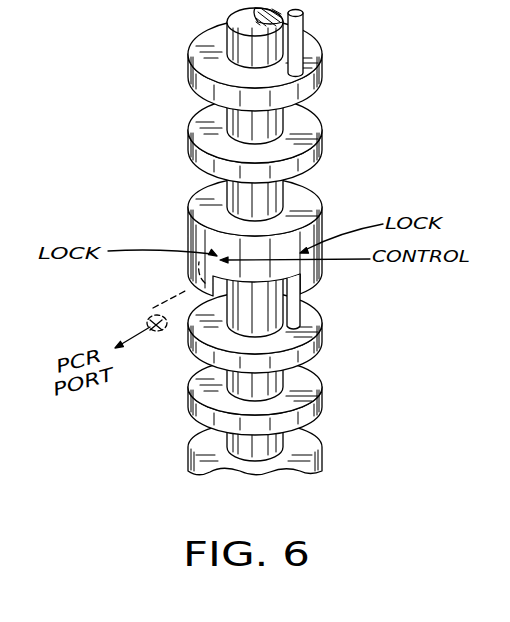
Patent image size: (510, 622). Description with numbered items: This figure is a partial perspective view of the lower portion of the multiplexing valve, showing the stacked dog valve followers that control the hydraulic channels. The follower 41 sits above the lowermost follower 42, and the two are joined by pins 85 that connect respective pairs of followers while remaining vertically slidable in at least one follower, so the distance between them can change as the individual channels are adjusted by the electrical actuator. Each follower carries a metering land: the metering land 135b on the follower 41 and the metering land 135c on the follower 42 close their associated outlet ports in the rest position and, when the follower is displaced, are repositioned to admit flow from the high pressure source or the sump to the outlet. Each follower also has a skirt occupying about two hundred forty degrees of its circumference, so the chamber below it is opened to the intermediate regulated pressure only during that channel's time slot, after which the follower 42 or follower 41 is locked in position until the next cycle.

The pins 85 is at (313, 19).
The follower 41 is at (317, 60).
The metering land 135b is at (317, 128).
The follower 42 is at (317, 330).
The metering land 135c is at (317, 401).